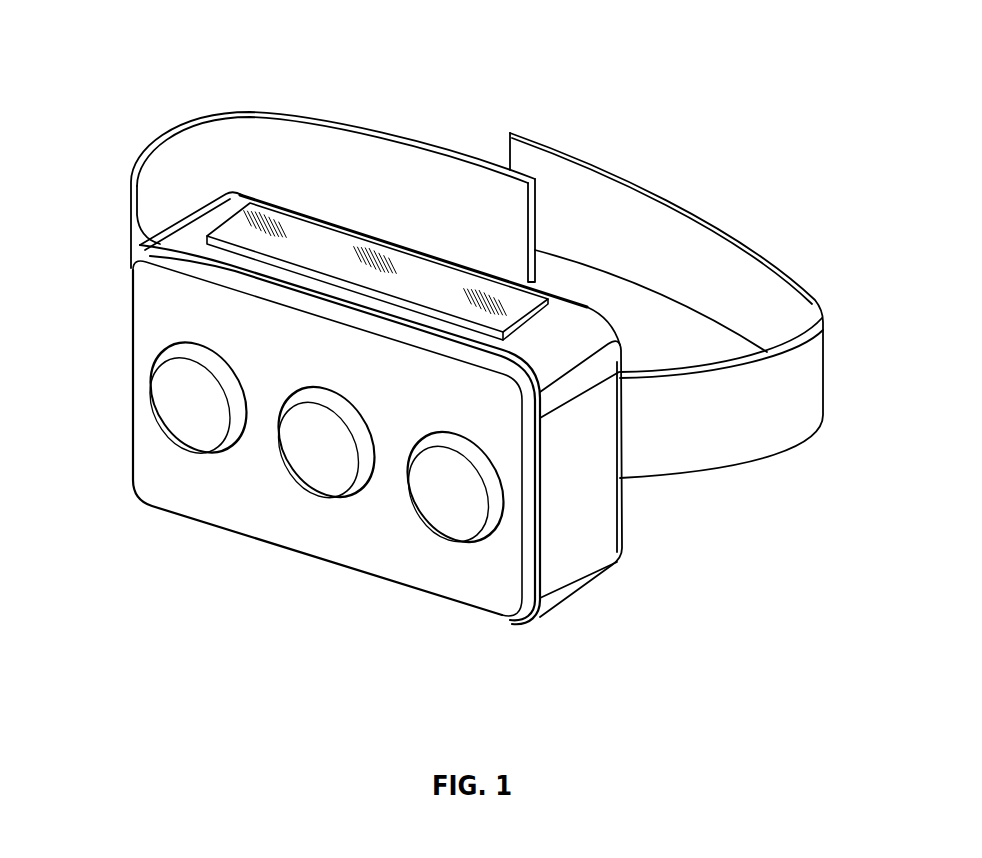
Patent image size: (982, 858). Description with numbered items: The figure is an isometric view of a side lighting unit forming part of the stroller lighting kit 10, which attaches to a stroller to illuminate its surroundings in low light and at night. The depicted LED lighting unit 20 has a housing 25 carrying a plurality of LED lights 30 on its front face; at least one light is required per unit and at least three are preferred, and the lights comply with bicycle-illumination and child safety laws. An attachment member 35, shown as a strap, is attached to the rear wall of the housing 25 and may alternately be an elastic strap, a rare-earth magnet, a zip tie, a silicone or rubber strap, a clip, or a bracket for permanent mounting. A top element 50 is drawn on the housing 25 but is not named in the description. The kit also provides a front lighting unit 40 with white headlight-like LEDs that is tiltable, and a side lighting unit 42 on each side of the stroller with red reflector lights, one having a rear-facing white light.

The stroller lighting kit 10 is at (142, 58).
The LED lighting unit 20 is at (480, 614).
The housing 25 is at (625, 482).
The LED lights 30 is at (180, 412).
The attachment member 35 is at (420, 140).
The LED front lighting unit 40 is at (128, 307).
The LED side lighting unit 42 is at (822, 365).
The solar panel 50 is at (240, 147).